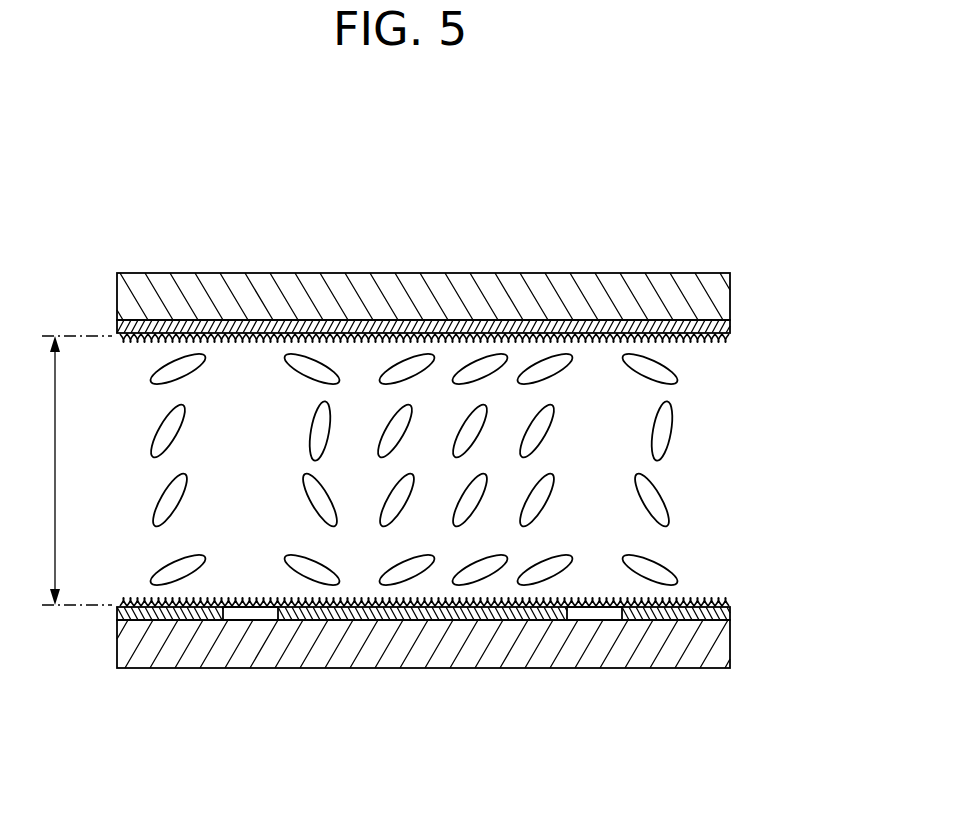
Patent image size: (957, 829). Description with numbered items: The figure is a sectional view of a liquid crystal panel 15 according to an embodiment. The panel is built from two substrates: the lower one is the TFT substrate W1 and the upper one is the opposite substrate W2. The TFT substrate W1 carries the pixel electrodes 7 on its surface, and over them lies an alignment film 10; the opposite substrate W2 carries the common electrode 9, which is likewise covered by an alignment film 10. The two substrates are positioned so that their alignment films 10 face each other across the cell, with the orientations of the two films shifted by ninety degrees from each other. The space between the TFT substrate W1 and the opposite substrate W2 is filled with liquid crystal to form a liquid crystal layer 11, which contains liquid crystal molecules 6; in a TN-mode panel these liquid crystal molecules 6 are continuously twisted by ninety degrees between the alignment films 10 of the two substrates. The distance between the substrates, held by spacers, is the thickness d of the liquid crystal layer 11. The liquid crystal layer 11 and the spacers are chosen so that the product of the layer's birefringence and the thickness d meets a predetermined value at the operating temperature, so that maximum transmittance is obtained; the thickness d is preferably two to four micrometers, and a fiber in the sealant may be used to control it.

The liquid crystal panel 15 is at (176, 224).
The opposite substrate W2 is at (622, 295).
The common electrode 9 is at (435, 327).
The alignment film 10 is at (770, 352).
The liquid crystal layer 11 is at (758, 337).
The liquid crystal molecules 6 is at (657, 445).
The pixel electrodes 7 is at (182, 612).
The TFT substrate W1 is at (517, 655).
The thickness of the liquid crystal layer d is at (72, 470).